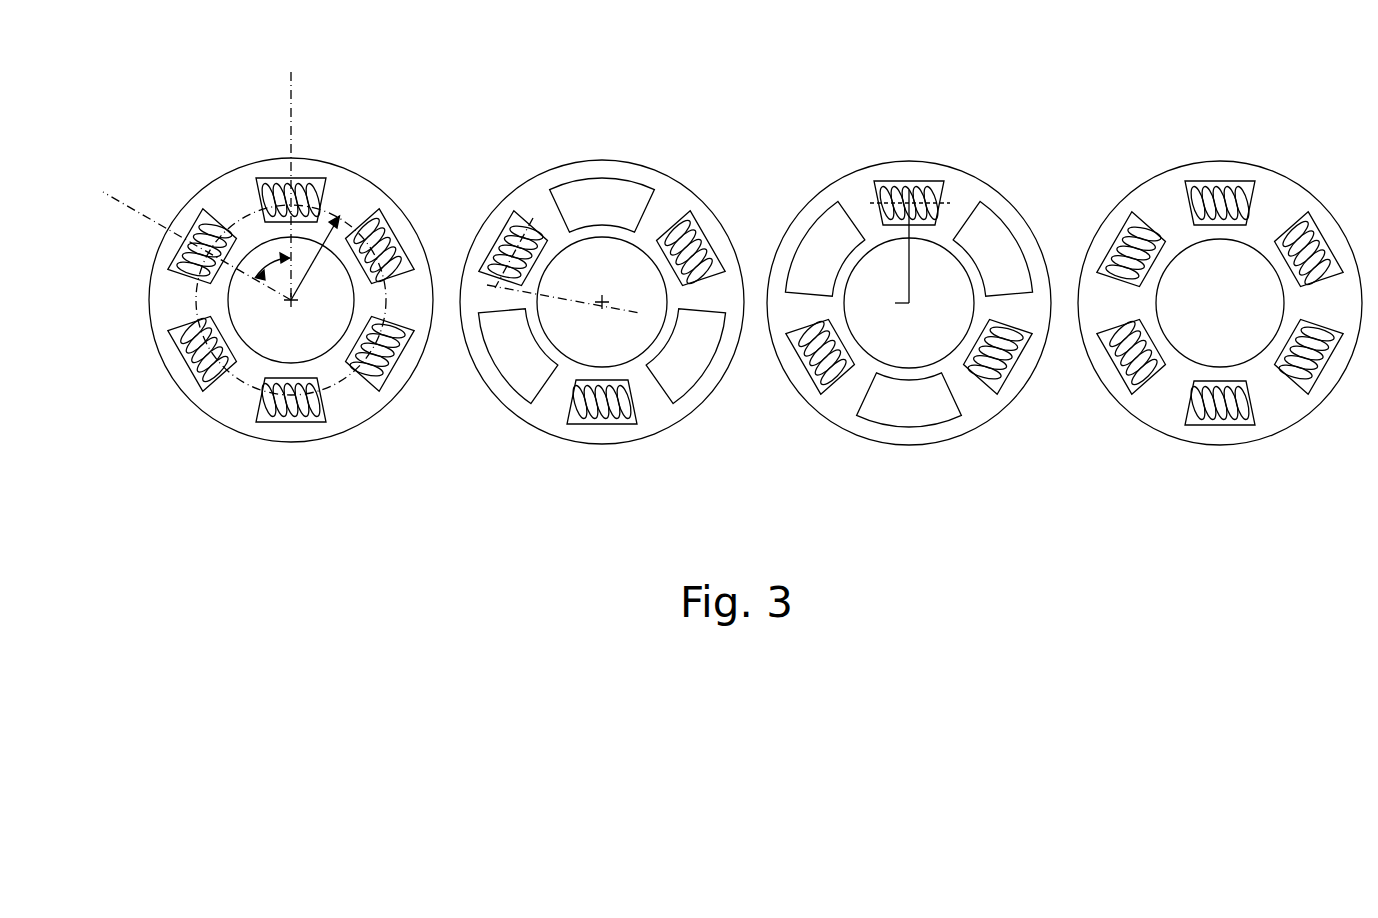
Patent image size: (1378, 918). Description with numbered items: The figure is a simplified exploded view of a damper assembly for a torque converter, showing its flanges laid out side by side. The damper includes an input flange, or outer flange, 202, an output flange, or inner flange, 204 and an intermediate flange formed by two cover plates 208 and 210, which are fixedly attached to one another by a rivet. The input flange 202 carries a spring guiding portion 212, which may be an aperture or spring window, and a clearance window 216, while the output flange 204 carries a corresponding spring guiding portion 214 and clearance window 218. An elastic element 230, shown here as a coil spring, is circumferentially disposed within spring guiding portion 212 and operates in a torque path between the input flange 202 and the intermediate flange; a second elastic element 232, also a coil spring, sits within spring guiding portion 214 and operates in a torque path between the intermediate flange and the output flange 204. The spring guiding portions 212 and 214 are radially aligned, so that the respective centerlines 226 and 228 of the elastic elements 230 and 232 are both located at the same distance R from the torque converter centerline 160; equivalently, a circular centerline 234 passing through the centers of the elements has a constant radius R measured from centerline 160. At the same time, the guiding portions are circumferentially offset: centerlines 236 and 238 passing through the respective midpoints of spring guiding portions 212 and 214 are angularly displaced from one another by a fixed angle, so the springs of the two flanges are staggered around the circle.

The torque converter centerline 160 is at (291, 300).
The distance R is at (308, 274).
The input flange 202 is at (543, 207).
The output flange 204 is at (963, 190).
The cover plate 208 is at (217, 203).
The cover plate 210 is at (1277, 197).
The spring guiding portion 212 is at (498, 223).
The spring guiding portion 214 is at (892, 197).
The clearance window 216 is at (605, 177).
The clearance window 218 is at (800, 208).
The centerline 226 is at (533, 218).
The centerline 228 is at (827, 213).
The elastic element 230 is at (339, 198).
The elastic element 232 is at (310, 173).
The circular centerline 234 is at (343, 392).
The centerline 236 is at (157, 220).
The centerline 238 is at (293, 100).